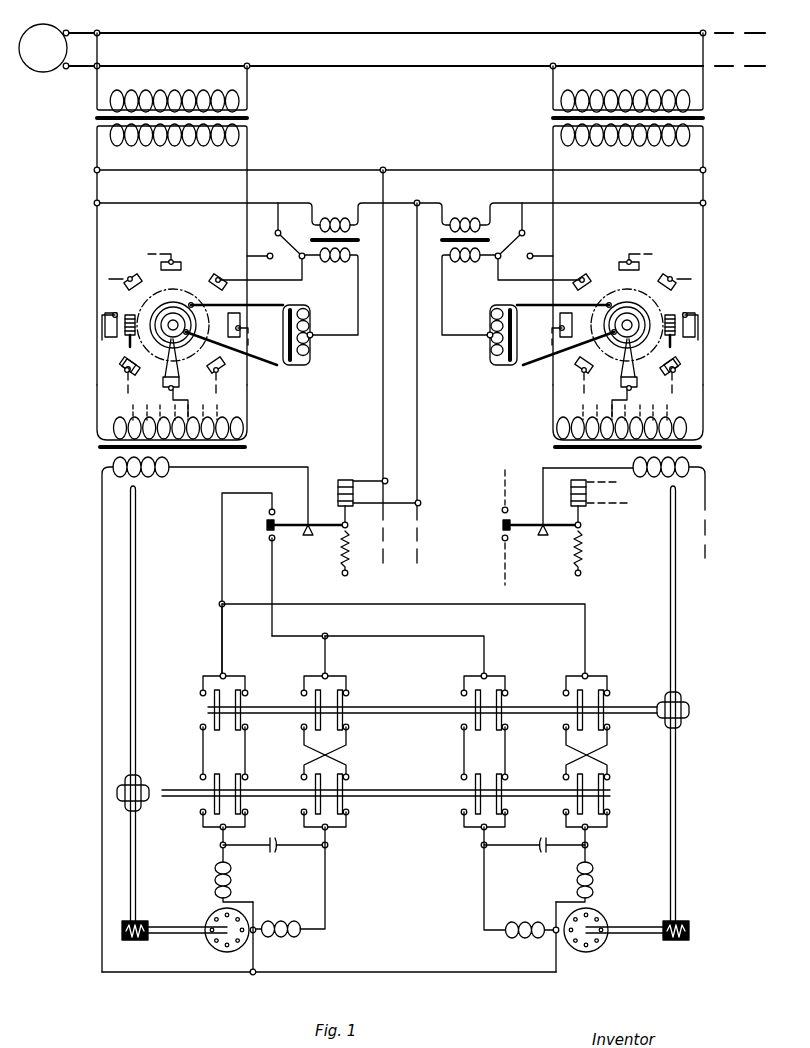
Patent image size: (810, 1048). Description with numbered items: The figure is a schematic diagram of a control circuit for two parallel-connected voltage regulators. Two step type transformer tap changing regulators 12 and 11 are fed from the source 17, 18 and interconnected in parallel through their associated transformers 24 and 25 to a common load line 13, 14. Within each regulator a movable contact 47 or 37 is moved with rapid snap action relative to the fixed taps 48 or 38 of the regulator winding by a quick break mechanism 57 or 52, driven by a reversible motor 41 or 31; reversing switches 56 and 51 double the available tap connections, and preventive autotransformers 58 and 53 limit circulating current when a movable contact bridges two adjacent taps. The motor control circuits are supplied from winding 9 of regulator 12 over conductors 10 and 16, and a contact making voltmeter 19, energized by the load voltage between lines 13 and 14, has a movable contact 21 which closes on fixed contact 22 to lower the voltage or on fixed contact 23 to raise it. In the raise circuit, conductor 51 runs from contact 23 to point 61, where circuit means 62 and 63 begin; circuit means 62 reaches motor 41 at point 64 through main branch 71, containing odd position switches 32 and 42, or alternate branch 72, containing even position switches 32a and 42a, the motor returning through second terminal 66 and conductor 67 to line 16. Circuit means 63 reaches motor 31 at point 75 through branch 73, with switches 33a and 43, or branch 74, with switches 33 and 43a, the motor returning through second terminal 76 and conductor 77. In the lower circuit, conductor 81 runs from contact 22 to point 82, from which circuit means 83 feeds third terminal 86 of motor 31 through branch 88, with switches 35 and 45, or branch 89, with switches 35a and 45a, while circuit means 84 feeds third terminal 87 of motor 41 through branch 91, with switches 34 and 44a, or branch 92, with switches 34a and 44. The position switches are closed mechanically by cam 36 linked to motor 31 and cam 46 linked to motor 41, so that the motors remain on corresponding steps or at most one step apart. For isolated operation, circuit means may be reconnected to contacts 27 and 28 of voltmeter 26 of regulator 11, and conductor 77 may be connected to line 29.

The source 17 is at (158, 35).
The source 18 is at (190, 66).
The transformer 24 is at (254, 120).
The transformer 25 is at (705, 117).
The reversing switch 56 is at (284, 236).
The reversing switch / conductor 51 is at (506, 236).
The quick break mechanism 57 is at (124, 312).
The quick break mechanism 52 is at (680, 306).
The preventive autotransformer 58 is at (310, 356).
The preventive autotransformer 53 is at (490, 358).
The step type transformer tap changing regulator 12 is at (272, 391).
The step type transformer tap changing regulator 11 is at (544, 391).
The movable contact 47 is at (131, 374).
The fixed taps 48 is at (178, 388).
The fixed taps 38 is at (614, 386).
The movable contact 37 is at (630, 388).
The load line 14 is at (382, 420).
The load line 13 is at (419, 434).
The line 16 is at (287, 468).
The winding 9 is at (158, 482).
The conductor 10 is at (100, 556).
The line 29 is at (706, 500).
The contact making voltmeter 19 is at (332, 497).
The movable contact 21 is at (282, 518).
The fixed contact 23 is at (268, 512).
The fixed contact 22 is at (270, 540).
The contact of voltmeter 26 27 is at (502, 508).
The contact of voltmeter 26 28 is at (503, 541).
The voltmeter 26 is at (610, 525).
The conductor 81 is at (273, 596).
The connection point 61 is at (220, 604).
The circuit means 63 is at (362, 604).
The circuit means 62 is at (220, 642).
The connection point 82 is at (328, 636).
The circuit means 83 is at (408, 636).
The circuit means 84 is at (326, 646).
The alternate branch circuit 72 is at (210, 676).
The main branch circuit 71 is at (226, 676).
The branch circuit 92 is at (318, 676).
The branch circuit 91 is at (338, 676).
The branch circuit 89 is at (480, 676).
The branch circuit 88 is at (486, 676).
The branch circuit 73 is at (584, 676).
The branch circuit 74 is at (588, 676).
The odd position switch 32 is at (246, 697).
The odd position switch 34 is at (348, 697).
The odd position switch 35 is at (508, 697).
The odd position switch 33 is at (608, 697).
The even position switch 32a is at (202, 713).
The even position switch 34a is at (304, 723).
The even position switch 35a is at (464, 723).
The even position switch 33a is at (566, 723).
The cam 36 is at (690, 716).
The cam 46 is at (146, 788).
The odd position switch 42 is at (246, 781).
The odd position switch 44 is at (348, 781).
The odd position switch 45 is at (508, 781).
The odd position switch 43 is at (608, 789).
The even position switch 42a is at (200, 813).
The even position switch 44a is at (304, 810).
The even position switch 45a is at (464, 810).
The even position switch 43a is at (566, 810).
The connection point 64 is at (219, 847).
The third terminal 87 is at (326, 845).
The third terminal 86 is at (482, 846).
The connection point 75 is at (589, 845).
The second terminal 66 is at (258, 928).
The conductor 67 is at (257, 951).
The reversible motor 41 is at (200, 965).
The second terminal 76 is at (554, 928).
The conductor 77 is at (554, 954).
The reversible motor 31 is at (614, 965).